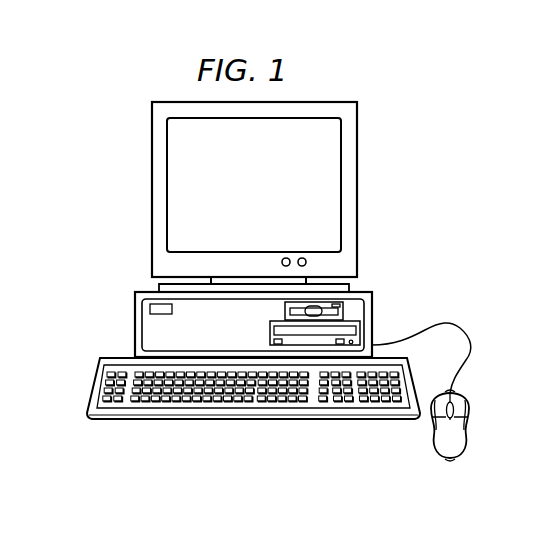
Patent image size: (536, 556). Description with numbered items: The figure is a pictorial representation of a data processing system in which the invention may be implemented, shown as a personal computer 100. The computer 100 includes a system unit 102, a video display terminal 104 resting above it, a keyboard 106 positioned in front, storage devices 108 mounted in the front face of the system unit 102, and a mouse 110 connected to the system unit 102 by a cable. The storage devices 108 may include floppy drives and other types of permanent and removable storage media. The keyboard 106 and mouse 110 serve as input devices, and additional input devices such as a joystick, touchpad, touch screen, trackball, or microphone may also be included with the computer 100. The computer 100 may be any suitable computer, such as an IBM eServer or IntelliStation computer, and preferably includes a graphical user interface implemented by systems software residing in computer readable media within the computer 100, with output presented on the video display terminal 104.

The computer 100 is at (153, 58).
The system unit 102 is at (135, 323).
The video display terminal 104 is at (357, 189).
The keyboard 106 is at (185, 420).
The storage devices 108 is at (343, 311).
The mouse 110 is at (449, 458).